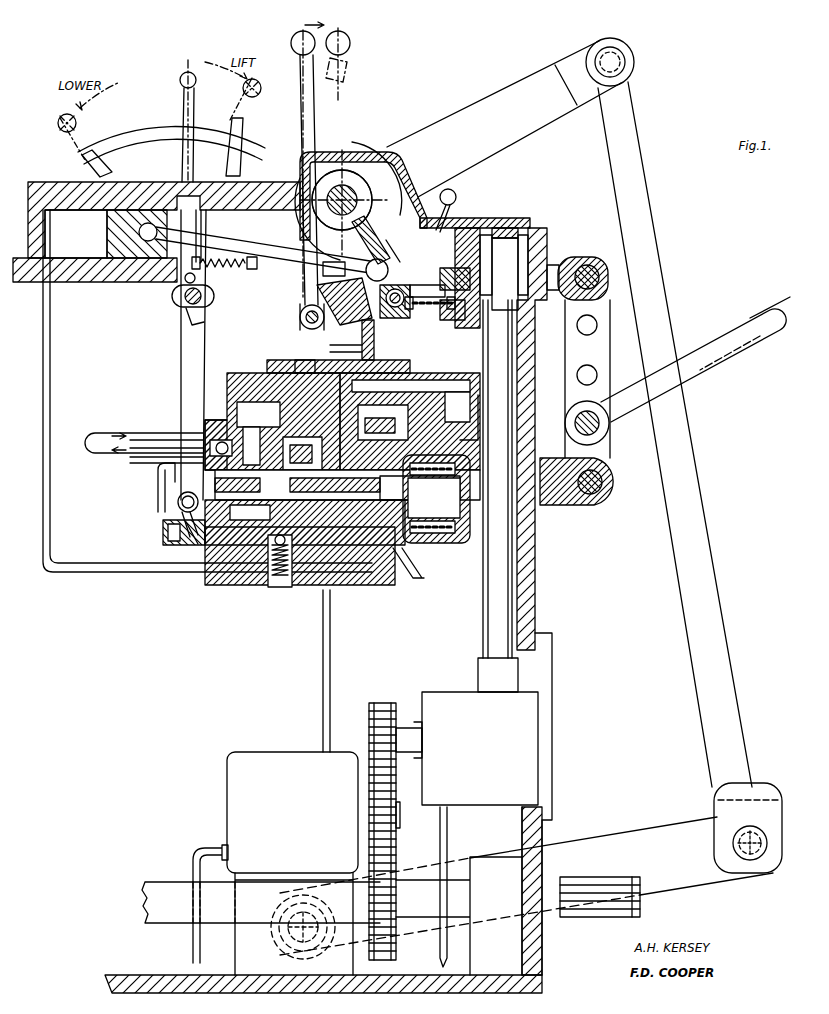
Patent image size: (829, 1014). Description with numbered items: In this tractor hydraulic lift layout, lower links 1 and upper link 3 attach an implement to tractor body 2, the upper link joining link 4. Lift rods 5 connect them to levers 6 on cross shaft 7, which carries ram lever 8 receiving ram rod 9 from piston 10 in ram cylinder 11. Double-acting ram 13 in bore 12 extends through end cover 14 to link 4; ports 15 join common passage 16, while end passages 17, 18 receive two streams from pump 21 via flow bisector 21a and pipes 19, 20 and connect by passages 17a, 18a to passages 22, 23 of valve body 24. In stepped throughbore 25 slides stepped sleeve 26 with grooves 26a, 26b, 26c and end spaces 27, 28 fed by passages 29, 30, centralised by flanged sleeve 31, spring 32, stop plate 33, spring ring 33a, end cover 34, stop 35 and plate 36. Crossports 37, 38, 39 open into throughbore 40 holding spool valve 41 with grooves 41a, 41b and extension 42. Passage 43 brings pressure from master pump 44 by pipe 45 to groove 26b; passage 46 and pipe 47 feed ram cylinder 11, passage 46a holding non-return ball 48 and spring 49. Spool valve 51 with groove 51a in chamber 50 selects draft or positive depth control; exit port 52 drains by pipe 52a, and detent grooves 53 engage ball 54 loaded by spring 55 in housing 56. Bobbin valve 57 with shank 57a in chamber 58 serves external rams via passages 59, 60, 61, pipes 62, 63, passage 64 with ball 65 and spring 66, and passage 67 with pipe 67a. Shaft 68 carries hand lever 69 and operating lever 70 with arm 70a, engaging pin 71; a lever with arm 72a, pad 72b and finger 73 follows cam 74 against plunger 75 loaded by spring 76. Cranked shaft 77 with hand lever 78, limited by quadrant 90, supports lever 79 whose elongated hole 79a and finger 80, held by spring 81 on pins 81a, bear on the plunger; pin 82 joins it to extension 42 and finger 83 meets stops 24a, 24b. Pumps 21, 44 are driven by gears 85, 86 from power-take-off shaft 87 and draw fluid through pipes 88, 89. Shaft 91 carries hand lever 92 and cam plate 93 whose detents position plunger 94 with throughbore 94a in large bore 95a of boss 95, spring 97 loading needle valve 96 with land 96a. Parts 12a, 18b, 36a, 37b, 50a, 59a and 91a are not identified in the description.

The lower links 1 is at (680, 827).
The tractor body 2 is at (538, 597).
The upper link 3 is at (758, 330).
The link 4 is at (600, 343).
The lift rods 5 is at (657, 293).
The levers 6 is at (465, 116).
The cross shaft 7 is at (343, 185).
The ram lever 8 is at (375, 245).
The ram rod 9 is at (293, 258).
The piston 10 is at (128, 262).
The ram cylinder 11 is at (96, 270).
The bore 12 is at (538, 222).
The boss 12a is at (560, 268).
The double acting ram 13 is at (505, 238).
The end cover 14 is at (553, 262).
The ports 15 is at (523, 236).
The common passage 16 is at (470, 232).
The passage 17 is at (525, 398).
The passage 17a is at (492, 383).
The passage 18 is at (525, 380).
The passage 18a is at (519, 381).
The rod portion 18b is at (525, 350).
The pipe 19 is at (483, 602).
The pipe 20 is at (508, 596).
The small pump 21 is at (440, 692).
The flow bisector 21a is at (482, 673).
The passage 22 is at (432, 398).
The passage 23 is at (467, 398).
The valve body 24 is at (449, 398).
The stop 24a is at (208, 535).
The stop 24b is at (163, 540).
The stepped throughbore 25 is at (397, 585).
The stepped sleeve 26 is at (421, 588).
The annular groove 26a is at (244, 530).
The annular groove 26b is at (322, 600).
The annular groove 26c is at (418, 585).
The end space 27 is at (222, 556).
The end space 28 is at (410, 563).
The passage 29 is at (470, 443).
The passage 30 is at (408, 428).
The flanged sleeve 31 is at (448, 500).
The spring 32 is at (445, 540).
The stop plate 33 is at (450, 532).
The spring ring 33a is at (470, 523).
The end cover 34 is at (430, 540).
The stop 35 is at (441, 553).
The plate 36 is at (351, 498).
The piston land 36a is at (308, 463).
The crossport 37 is at (262, 528).
The spool 37b is at (297, 491).
The crossport 38 is at (345, 575).
The crossport 39 is at (379, 592).
The throughbore 40 is at (455, 480).
The spool valve 41 is at (420, 489).
The annular groove 41a is at (302, 580).
The annular groove 41b is at (431, 495).
The extension 42 is at (226, 532).
The passage 43 is at (349, 592).
The master fluid pump 44 is at (235, 770).
The pipe 45 is at (323, 712).
The passage 46 is at (392, 575).
The passage 46a is at (250, 565).
The pipe 47 is at (92, 570).
The ball 48 is at (268, 575).
The spring 49 is at (280, 585).
The spool valve chamber 50 is at (430, 395).
The passage 50a is at (432, 380).
The spool valve 51 is at (457, 407).
The annular groove 51a is at (460, 380).
The exit port 52 is at (447, 430).
The pipe 52a is at (467, 430).
The annular grooves 53 is at (359, 340).
The ball 54 is at (344, 341).
The spring 55 is at (301, 360).
The housing 56 is at (282, 366).
The bobbin valve 57 is at (250, 400).
The reduced shank portion 57a is at (233, 408).
The bobbin valve chamber 58 is at (232, 385).
The passage 59 is at (282, 406).
The bore portion 59a is at (308, 409).
The passage 60 is at (262, 455).
The passage 61 is at (288, 402).
The pipe 62 is at (152, 433).
The pipe 63 is at (155, 458).
The passage 64 is at (160, 440).
The non-return valve ball 65 is at (213, 452).
The spring 66 is at (216, 444).
The passage 67 is at (270, 430).
The pipe 67a is at (160, 508).
The shaft 68 is at (300, 316).
The hand lever 69 is at (300, 97).
The operating lever 70 is at (350, 305).
The arm 70a is at (351, 291).
The pin 71 is at (388, 318).
The short arm 72a is at (337, 262).
The contacting pad 72b is at (373, 248).
The finger 73 is at (396, 313).
The cam 74 is at (360, 190).
The plunger 75 is at (244, 226).
The spring 76 is at (300, 190).
The cranked shaft 77 is at (184, 290).
The hand lever 78 is at (186, 99).
The lever 79 is at (181, 370).
The hole 79a is at (205, 318).
The finger 80 is at (198, 212).
The spring 81 is at (236, 268).
The pins 81a is at (254, 268).
The pin 82 is at (168, 540).
The finger 83 is at (190, 540).
The gear wheel 85 is at (398, 785).
The gear wheel 86 is at (440, 880).
The power-take-off shaft 87 is at (172, 888).
The pipe 88 is at (204, 848).
The pipe 89 is at (440, 836).
The quadrant 90 is at (138, 128).
The shaft 91 is at (432, 330).
The spring seat 91a is at (422, 322).
The hand lever 92 is at (456, 195).
The cam plate 93 is at (422, 317).
The plunger 94 is at (452, 318).
The throughbore 94a is at (443, 320).
The boss 95 is at (442, 270).
The large bore 95a is at (452, 257).
The needle valve 96 is at (427, 283).
The land 96a is at (450, 277).
The spring 97 is at (397, 252).